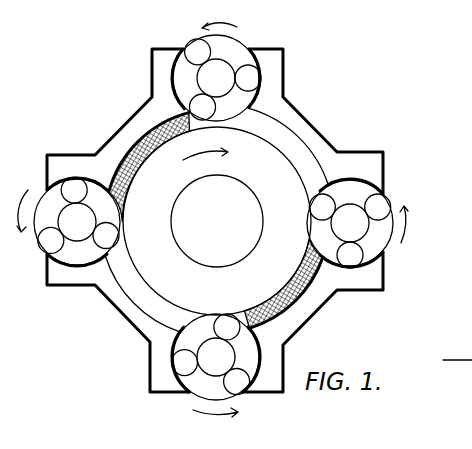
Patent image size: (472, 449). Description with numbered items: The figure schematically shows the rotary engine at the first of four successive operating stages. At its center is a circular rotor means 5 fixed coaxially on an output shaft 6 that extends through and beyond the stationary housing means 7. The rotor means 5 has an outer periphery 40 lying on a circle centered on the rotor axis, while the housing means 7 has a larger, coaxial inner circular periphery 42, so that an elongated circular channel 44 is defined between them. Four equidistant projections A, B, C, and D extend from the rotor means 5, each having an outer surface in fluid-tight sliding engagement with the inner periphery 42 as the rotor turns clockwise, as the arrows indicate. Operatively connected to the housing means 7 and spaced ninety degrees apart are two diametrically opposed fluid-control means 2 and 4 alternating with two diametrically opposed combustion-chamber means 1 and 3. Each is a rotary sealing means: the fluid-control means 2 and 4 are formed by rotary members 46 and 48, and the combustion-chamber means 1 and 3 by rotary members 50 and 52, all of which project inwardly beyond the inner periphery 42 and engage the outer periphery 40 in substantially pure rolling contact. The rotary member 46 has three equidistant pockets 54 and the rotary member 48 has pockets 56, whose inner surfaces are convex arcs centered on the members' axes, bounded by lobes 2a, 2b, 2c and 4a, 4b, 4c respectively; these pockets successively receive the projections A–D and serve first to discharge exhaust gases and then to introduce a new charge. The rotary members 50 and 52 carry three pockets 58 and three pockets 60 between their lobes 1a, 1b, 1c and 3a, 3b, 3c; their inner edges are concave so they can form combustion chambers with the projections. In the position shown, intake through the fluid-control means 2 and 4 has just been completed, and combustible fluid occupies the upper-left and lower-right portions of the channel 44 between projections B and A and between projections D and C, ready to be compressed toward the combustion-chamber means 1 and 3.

The combustion-chamber means 1 is at (220, 71).
The lobe of combustion-chamber means 1 1a is at (198, 63).
The lobe of combustion-chamber means 1 1b is at (218, 105).
The lobe of combustion-chamber means 1 1c is at (246, 71).
The fluid-control means 2 is at (74, 207).
The lobe of fluid-control means 2 2a is at (71, 226).
The lobe of fluid-control means 2 2b is at (94, 241).
The lobe of fluid-control means 2 2c is at (68, 195).
The combustion-chamber means 3 is at (216, 375).
The lobe of combustion-chamber means 3 3a is at (213, 330).
The lobe of combustion-chamber means 3 3b is at (210, 358).
The lobe of combustion-chamber means 3 3c is at (222, 382).
The fluid-control means 4 is at (358, 234).
The lobe of fluid-control means 4 4a is at (340, 253).
The lobe of fluid-control means 4 4b is at (366, 203).
The lobe of fluid-control means 4 4c is at (346, 217).
The rotor means 5 is at (216, 221).
The output shaft 6 is at (217, 221).
The housing means 7 is at (124, 124).
The outer periphery 40 is at (294, 169).
The inner circular periphery 42 is at (281, 118).
The channel 44 is at (270, 122).
The rotary member 46 is at (90, 234).
The rotary member 48 is at (363, 235).
The rotary member 50 is at (228, 88).
The rotary member 52 is at (228, 366).
The pockets 54 is at (50, 240).
The pockets 56 is at (377, 206).
The pockets 58 is at (203, 60).
The pockets 60 is at (237, 383).
The projection A is at (200, 120).
The projection B is at (118, 237).
The projection C is at (233, 317).
The projection D is at (312, 209).